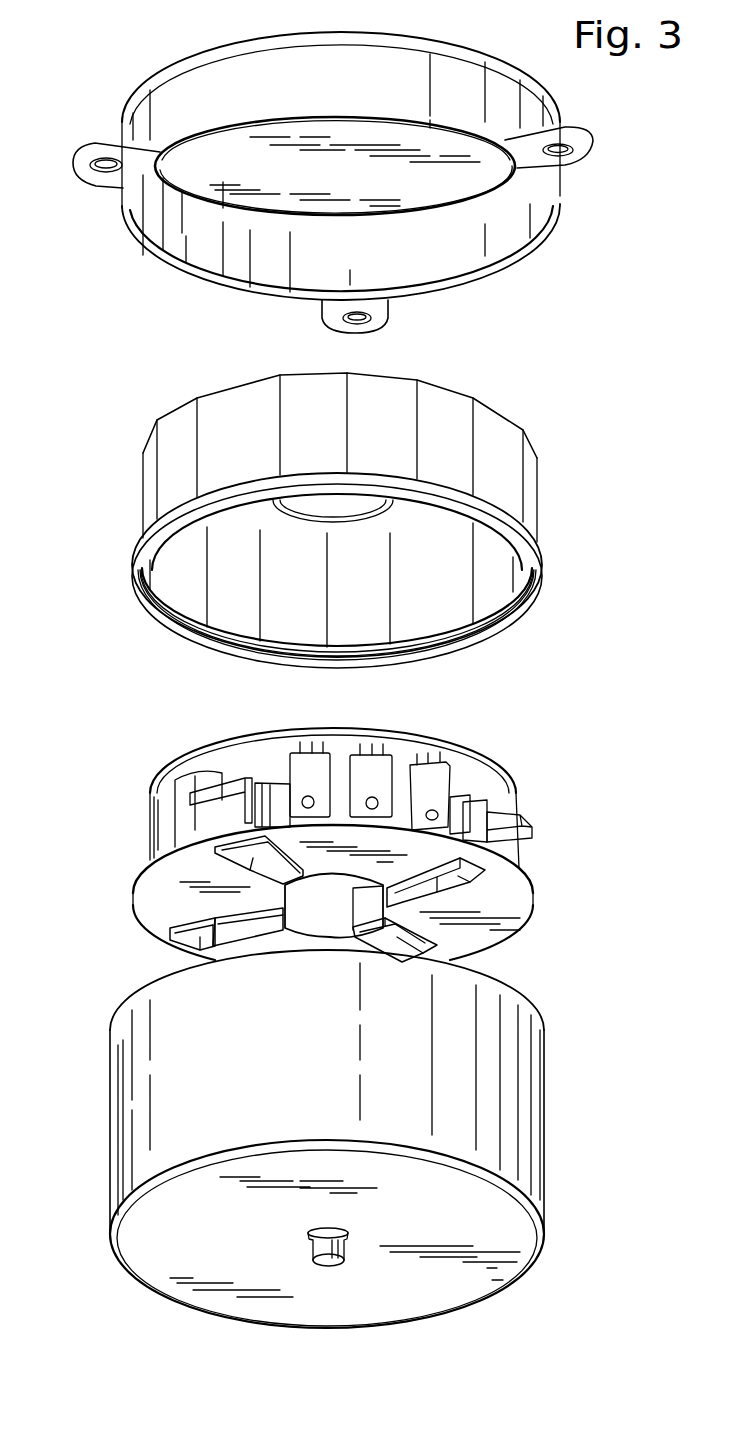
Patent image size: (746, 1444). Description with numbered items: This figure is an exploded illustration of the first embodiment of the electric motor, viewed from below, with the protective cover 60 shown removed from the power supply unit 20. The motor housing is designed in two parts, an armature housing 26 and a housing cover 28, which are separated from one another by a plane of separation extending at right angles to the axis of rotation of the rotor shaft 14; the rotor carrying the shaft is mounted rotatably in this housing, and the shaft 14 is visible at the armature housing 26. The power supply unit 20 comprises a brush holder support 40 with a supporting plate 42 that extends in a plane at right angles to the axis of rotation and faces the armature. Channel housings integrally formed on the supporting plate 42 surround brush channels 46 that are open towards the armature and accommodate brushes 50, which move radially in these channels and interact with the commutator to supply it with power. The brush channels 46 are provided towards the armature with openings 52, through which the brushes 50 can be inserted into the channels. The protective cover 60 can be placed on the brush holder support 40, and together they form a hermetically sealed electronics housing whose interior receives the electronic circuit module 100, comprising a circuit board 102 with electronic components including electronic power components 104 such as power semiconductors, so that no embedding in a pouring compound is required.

The rotor shaft 14 is at (312, 1246).
The power supply unit 20 is at (538, 822).
The armature housing 26 is at (140, 1119).
The housing cover 28 is at (175, 88).
The brush holder support 40 is at (184, 866).
The supporting plate 42 is at (505, 787).
The brush channels 46 is at (477, 893).
The brushes 50 is at (214, 924).
The openings 52 is at (178, 950).
The protective cover 60 is at (150, 477).
The electronic circuit module 100 is at (182, 760).
The circuit board 102 is at (252, 742).
The electronic power components 104 is at (452, 781).